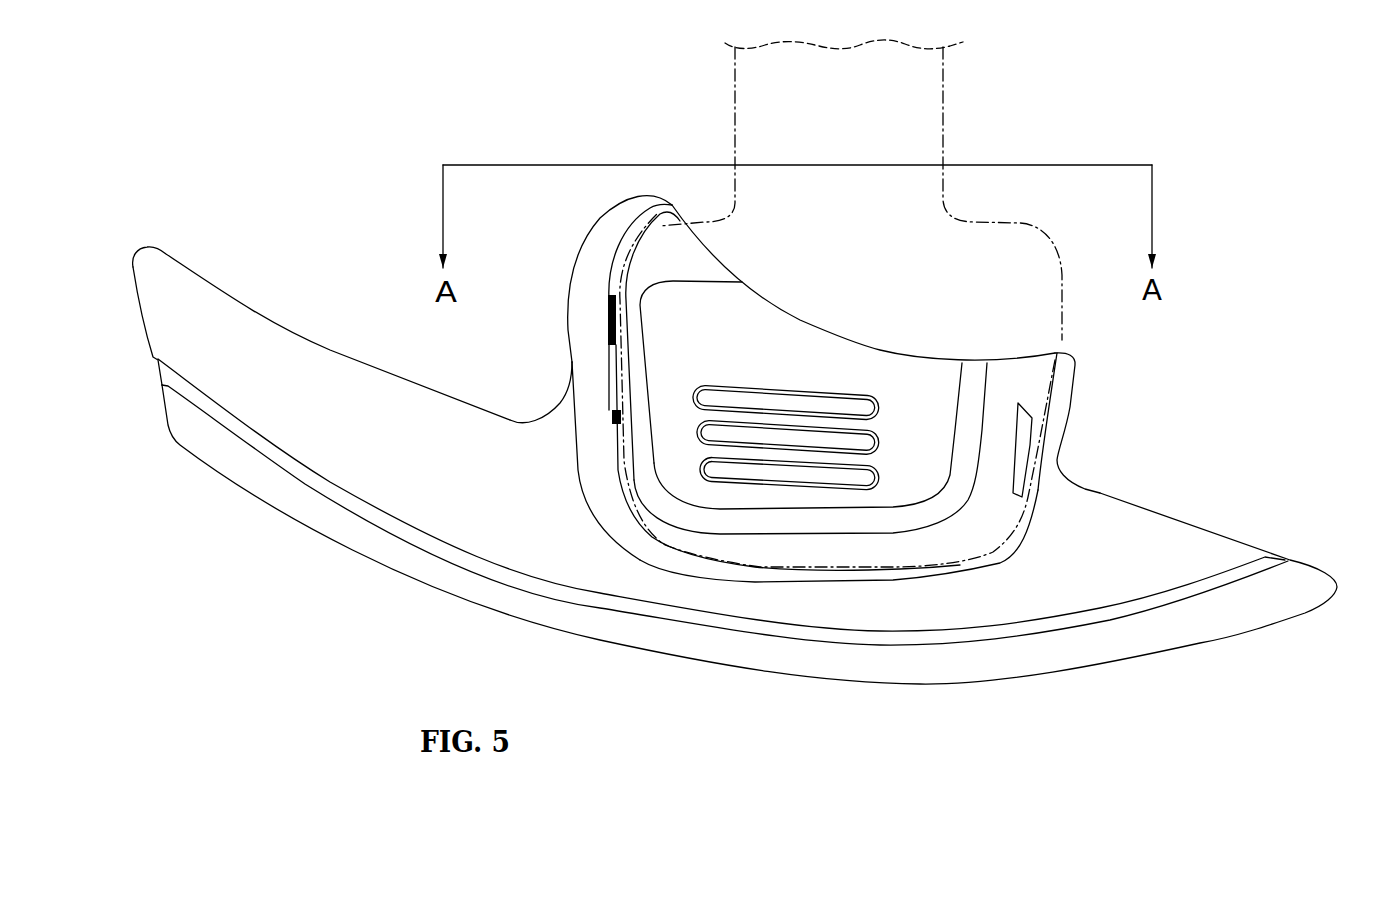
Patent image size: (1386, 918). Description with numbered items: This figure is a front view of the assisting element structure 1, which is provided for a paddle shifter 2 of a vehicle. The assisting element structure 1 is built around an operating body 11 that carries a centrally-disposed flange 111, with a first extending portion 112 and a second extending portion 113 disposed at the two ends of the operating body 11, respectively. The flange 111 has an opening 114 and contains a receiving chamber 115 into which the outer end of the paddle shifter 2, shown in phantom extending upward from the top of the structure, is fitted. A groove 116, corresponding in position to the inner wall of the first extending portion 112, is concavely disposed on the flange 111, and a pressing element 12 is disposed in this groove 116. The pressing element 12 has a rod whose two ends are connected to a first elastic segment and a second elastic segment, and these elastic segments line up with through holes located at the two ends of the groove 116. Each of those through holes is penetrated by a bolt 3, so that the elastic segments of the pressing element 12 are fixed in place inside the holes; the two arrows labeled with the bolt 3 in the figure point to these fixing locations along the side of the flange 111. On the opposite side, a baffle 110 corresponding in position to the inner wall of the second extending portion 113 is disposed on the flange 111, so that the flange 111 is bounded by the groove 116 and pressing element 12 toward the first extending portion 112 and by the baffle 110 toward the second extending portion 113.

The assisting element structure 1 is at (1251, 464).
The paddle shifter 2 is at (946, 97).
The bolt 3 is at (567, 344).
The operating body 11 is at (820, 479).
The pressing element 12 is at (619, 357).
The baffle 110 is at (1058, 400).
The flange 111 is at (837, 582).
The first extending portion 112 is at (230, 333).
The second extending portion 113 is at (1138, 630).
The opening 114 is at (845, 337).
The receiving chamber 115 is at (733, 547).
The groove 116 is at (610, 286).